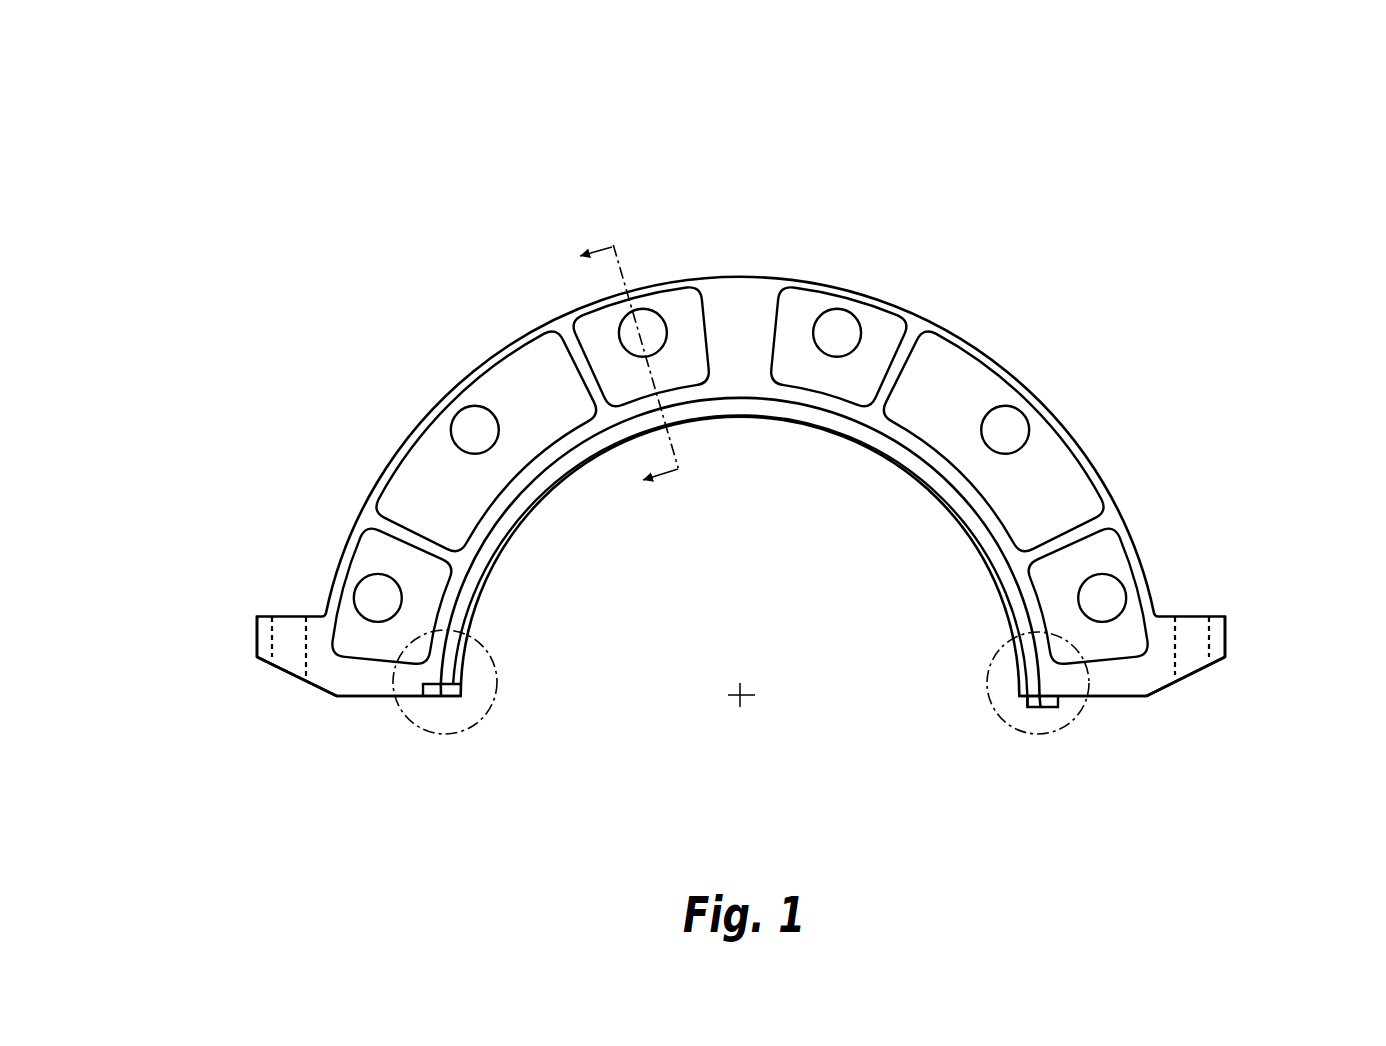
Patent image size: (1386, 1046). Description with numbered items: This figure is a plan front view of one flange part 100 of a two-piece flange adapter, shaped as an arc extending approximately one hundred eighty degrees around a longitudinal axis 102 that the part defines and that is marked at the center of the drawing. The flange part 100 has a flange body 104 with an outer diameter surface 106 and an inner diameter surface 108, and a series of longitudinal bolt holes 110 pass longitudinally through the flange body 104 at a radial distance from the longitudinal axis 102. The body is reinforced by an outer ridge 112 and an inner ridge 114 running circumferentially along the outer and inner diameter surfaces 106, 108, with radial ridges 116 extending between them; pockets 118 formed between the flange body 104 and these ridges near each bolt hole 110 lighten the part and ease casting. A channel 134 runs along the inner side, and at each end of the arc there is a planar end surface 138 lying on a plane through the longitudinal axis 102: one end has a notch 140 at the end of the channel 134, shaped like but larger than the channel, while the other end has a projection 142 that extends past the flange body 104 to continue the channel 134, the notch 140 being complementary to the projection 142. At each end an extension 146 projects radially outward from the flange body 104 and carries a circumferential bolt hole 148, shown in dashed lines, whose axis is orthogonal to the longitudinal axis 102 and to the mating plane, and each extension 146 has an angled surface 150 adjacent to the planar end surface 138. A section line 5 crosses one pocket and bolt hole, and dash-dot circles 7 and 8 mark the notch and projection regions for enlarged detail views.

The flange part 100 is at (1180, 174).
The longitudinal axis 102 is at (741, 698).
The flange body 104 is at (1068, 480).
The outer diameter surface 106 is at (977, 343).
The inner diameter surface 108 is at (985, 522).
The longitudinal bolt holes 110 is at (470, 430).
The outer ridge 112 is at (810, 287).
The inner ridge 114 is at (820, 403).
The radial ridges 116 is at (737, 295).
The pockets 118 is at (872, 325).
The channel 134 is at (1017, 615).
The planar end surface 138 is at (366, 700).
The notch 140 is at (443, 692).
The projection 142 is at (1030, 707).
The extension 146 is at (262, 635).
The circumferential bolt hole 148 is at (293, 635).
The angled surface 150 is at (318, 692).
The section line 5- 5 is at (629, 360).
The detail circle 7 is at (497, 693).
The detail circle 8 is at (988, 683).